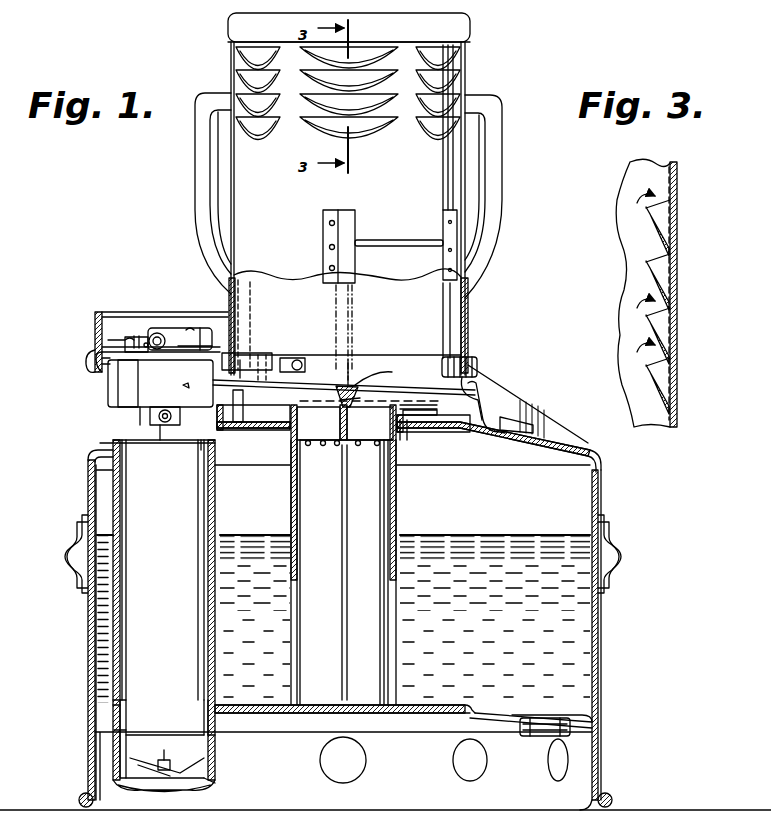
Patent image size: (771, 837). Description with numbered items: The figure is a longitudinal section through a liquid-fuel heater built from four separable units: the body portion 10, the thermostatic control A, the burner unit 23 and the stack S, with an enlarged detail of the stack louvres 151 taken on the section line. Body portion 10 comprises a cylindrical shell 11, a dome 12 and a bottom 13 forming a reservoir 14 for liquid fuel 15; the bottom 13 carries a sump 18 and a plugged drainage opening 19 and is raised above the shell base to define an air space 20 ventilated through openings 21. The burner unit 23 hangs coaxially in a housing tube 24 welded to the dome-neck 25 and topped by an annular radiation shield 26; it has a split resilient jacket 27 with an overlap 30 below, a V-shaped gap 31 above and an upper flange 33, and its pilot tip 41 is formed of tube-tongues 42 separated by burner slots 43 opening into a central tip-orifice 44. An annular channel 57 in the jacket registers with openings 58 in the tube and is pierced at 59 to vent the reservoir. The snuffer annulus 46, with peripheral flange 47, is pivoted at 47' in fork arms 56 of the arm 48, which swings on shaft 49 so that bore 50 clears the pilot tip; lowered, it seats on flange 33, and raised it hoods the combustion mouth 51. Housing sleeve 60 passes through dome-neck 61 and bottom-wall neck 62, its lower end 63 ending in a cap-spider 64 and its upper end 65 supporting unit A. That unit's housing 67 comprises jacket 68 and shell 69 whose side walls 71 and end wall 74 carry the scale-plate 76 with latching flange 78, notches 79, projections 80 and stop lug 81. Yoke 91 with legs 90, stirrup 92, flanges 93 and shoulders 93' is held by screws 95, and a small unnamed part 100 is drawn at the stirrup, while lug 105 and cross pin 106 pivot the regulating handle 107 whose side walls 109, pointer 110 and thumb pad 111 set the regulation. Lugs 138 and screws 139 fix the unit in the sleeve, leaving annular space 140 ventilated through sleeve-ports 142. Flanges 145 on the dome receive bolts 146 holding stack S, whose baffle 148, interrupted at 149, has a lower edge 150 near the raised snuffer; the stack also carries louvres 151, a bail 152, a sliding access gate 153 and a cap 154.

In FIG. 1, the body portion 10 is at (596, 452).
In FIG. 1, the cylindrical shell 11 is at (598, 653).
In FIG. 1, the dome 12 is at (522, 444).
In FIG. 1, the bottom 13 is at (428, 713).
In FIG. 1, the reservoir 14 is at (586, 505).
In FIG. 1, the liquid fuel 15 is at (578, 618).
In FIG. 1, the sump 18 is at (490, 715).
In FIG. 1, the drainage opening 19 is at (525, 738).
In FIG. 1, the air space 20 is at (468, 800).
In FIG. 1, the openings 21 is at (350, 776).
In FIG. 1, the burner unit 23 is at (372, 496).
In FIG. 1, the housing tube 24 is at (397, 517).
In FIG. 1, the dome-neck 25 is at (408, 432).
In FIG. 1, the annular radiation shield 26 is at (446, 432).
In FIG. 1, the jacket 27 is at (382, 630).
In FIG. 1, the overlap 30 is at (344, 672).
In FIG. 1, the V-shaped gap 31 is at (342, 543).
In FIG. 1, the flange 33 is at (285, 415).
In FIG. 1, the pilot burner tip 41 is at (366, 422).
In FIG. 1, the tube-tongues 42 is at (315, 492).
In FIG. 1, the burner slots 43 is at (368, 454).
In FIG. 1, the central tip-orifice 44 is at (356, 398).
In FIG. 1, the annulus 46 is at (246, 418).
In FIG. 1, the outer peripheral flange 47 is at (386, 360).
In FIG. 1, the pivotal mounting 47' is at (365, 351).
In FIG. 1, the arm 48 is at (266, 338).
In FIG. 1, the shaft 49 is at (183, 395).
In FIG. 1, the bore 50 is at (352, 383).
In FIG. 1, the combustion mouth 51 is at (400, 392).
In FIG. 1, the fork arms 56 is at (312, 360).
In FIG. 1, the annular channel 57 is at (220, 475).
In FIG. 1, the openings 58 is at (380, 450).
In FIG. 1, the pierced holes 59 is at (324, 446).
In FIG. 1, the housing sleeve 60 is at (92, 508).
In FIG. 1, the dome-neck 61 is at (113, 444).
In FIG. 1, the bottom-wall neck 62 is at (110, 712).
In FIG. 1, the lower end 63 is at (118, 733).
In FIG. 1, the cap-spider 64 is at (212, 788).
In FIG. 1, the upper end 65 is at (112, 432).
In FIG. 1, the housing 67 is at (193, 520).
In FIG. 1, the cylindrical jacket 68 is at (128, 600).
In FIG. 1, the shell 69 is at (106, 364).
In FIG. 1, the side walls 71 is at (148, 410).
In FIG. 1, the end wall 74 is at (112, 384).
In FIG. 1, the scale-plate 76 is at (88, 350).
In FIG. 1, the latching flange 78 is at (138, 383).
In FIG. 1, the notches 79 is at (136, 344).
In FIG. 1, the projections 80 is at (143, 344).
In FIG. 1, the stop lug 81 is at (149, 342).
In FIG. 1, the legs 90 is at (214, 732).
In FIG. 1, the calibration adjustment member 91 is at (130, 724).
In FIG. 1, the stirrup portion 92 is at (195, 775).
In FIG. 1, the vertical flanges 93 is at (163, 794).
In FIG. 1, the horizontal shoulders 93' is at (164, 750).
In FIG. 1, the attachment screws 95 is at (212, 720).
In FIG. 1, the nozzle 100 is at (174, 754).
In FIG. 1, the lug 105 is at (160, 350).
In FIG. 1, the cross pin 106 is at (172, 333).
In FIG. 1, the regulating handle 107 is at (188, 327).
In FIG. 1, the side walls 109 is at (184, 338).
In FIG. 1, the pointer 110 is at (130, 340).
In FIG. 1, the thumb pressure pad 111 is at (240, 285).
In FIG. 1, the lugs 138 is at (170, 420).
In FIG. 1, the sleeve-carried screws 139 is at (161, 444).
In FIG. 1, the annular space 140 is at (212, 528).
In FIG. 1, the sleeve-ports 142 is at (97, 316).
In FIG. 1, the flanges 145 is at (490, 375).
In FIG. 1, the bolts 146 is at (470, 355).
In FIG. 1, the annular baffle 148 is at (486, 395).
In FIG. 1, the interruption 149 is at (242, 360).
In FIG. 1, the lower edge 150 is at (420, 398).
In FIG. 1, the louvres 151 is at (244, 78).
In FIG. 3, the louvres 151 is at (672, 228).
In FIG. 1, the bail 152 is at (500, 190).
In FIG. 1, the sliding access gate 153 is at (396, 246).
In FIG. 1, the cap 154 is at (470, 30).
In FIG. 1, the stack S is at (228, 168).
In FIG. 3, the stack S is at (690, 293).
In FIG. 1, the thermostatic control A is at (76, 402).